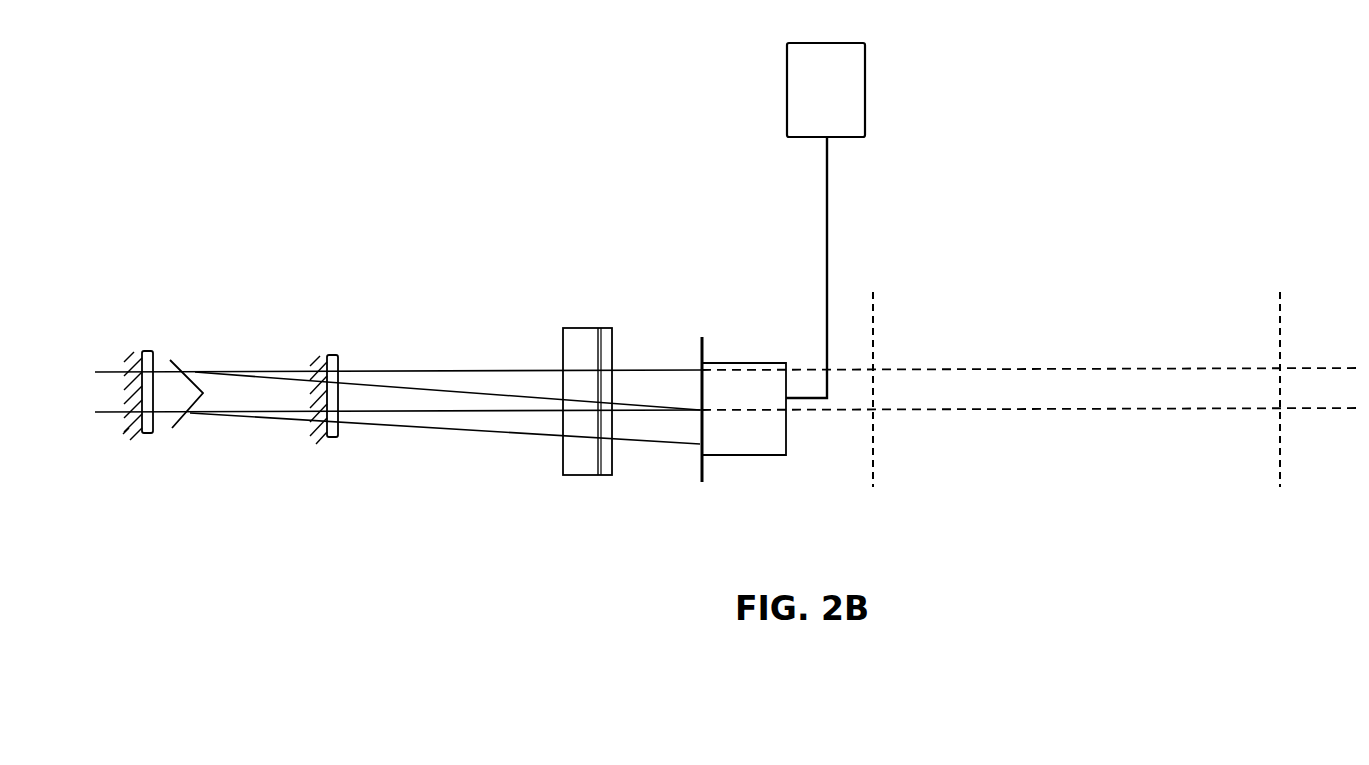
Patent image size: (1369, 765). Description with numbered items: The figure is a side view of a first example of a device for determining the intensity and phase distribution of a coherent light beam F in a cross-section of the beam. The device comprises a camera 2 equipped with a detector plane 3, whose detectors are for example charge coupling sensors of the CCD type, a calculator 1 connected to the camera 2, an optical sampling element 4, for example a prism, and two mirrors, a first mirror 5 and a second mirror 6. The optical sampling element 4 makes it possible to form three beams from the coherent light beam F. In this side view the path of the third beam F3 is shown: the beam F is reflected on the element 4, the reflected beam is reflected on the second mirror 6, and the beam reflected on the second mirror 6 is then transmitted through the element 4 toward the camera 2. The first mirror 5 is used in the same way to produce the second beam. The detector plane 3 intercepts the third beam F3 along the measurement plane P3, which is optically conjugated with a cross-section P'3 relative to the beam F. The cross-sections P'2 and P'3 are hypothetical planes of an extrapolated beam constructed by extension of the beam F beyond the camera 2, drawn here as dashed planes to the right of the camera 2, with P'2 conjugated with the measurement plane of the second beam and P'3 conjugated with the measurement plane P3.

The calculator 1 is at (866, 90).
The camera 2 is at (745, 457).
The detector plane 3 is at (705, 350).
The optical sampling element 4 is at (582, 476).
The first mirror 5 is at (332, 355).
The second mirror 6 is at (148, 351).
The coherent light beam F is at (233, 400).
The third beam F3 is at (641, 434).
The measurement plane P3 is at (697, 430).
The cross-section P'2 is at (913, 391).
The cross-section P'3 is at (1323, 391).